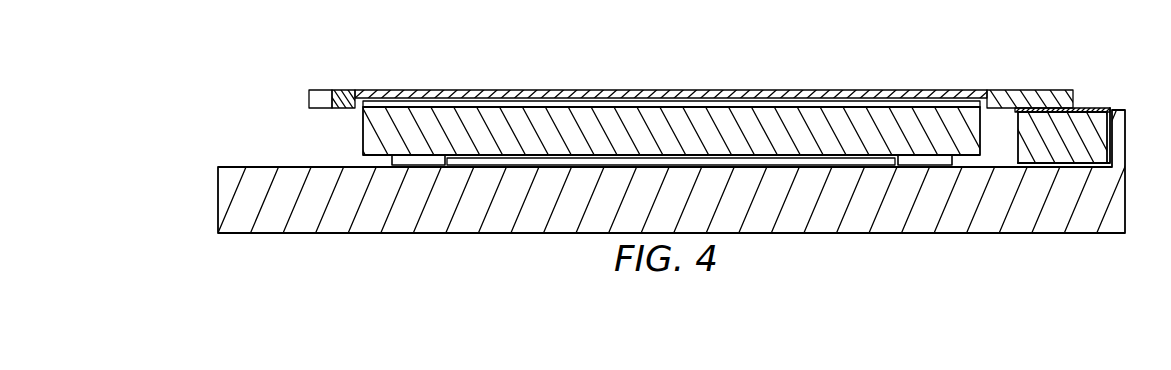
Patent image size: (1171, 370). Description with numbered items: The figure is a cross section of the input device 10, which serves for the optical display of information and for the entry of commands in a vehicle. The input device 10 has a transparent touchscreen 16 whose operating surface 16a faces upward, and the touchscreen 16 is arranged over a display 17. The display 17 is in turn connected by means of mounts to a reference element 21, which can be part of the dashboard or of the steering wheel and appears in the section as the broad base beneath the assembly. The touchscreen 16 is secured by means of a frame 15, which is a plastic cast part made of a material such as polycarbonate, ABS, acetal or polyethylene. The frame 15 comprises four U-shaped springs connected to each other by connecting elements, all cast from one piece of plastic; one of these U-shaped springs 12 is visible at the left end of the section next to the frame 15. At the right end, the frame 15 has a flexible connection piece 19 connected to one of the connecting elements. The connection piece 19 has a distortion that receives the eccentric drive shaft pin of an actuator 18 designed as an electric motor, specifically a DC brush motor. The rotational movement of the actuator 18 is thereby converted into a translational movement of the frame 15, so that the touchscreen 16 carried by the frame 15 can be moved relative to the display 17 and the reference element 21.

The input device 10 is at (226, 96).
The U-shaped spring 12 is at (309, 97).
The frame 15 is at (343, 90).
The touchscreen 16 is at (656, 102).
The operating surface 16a is at (583, 93).
The display 17 is at (368, 128).
The actuator 18 is at (1083, 117).
The connection piece 19 is at (1025, 93).
The reference element 21 is at (222, 207).